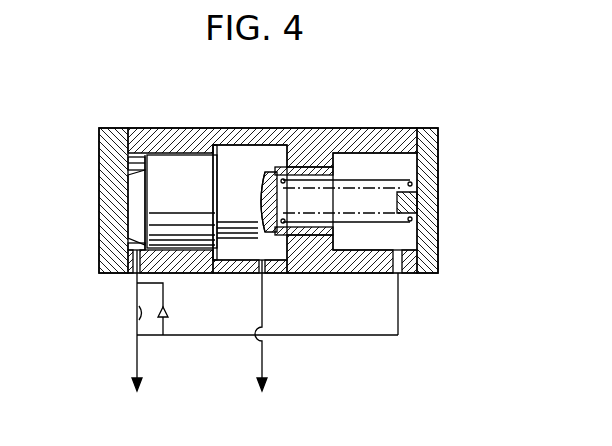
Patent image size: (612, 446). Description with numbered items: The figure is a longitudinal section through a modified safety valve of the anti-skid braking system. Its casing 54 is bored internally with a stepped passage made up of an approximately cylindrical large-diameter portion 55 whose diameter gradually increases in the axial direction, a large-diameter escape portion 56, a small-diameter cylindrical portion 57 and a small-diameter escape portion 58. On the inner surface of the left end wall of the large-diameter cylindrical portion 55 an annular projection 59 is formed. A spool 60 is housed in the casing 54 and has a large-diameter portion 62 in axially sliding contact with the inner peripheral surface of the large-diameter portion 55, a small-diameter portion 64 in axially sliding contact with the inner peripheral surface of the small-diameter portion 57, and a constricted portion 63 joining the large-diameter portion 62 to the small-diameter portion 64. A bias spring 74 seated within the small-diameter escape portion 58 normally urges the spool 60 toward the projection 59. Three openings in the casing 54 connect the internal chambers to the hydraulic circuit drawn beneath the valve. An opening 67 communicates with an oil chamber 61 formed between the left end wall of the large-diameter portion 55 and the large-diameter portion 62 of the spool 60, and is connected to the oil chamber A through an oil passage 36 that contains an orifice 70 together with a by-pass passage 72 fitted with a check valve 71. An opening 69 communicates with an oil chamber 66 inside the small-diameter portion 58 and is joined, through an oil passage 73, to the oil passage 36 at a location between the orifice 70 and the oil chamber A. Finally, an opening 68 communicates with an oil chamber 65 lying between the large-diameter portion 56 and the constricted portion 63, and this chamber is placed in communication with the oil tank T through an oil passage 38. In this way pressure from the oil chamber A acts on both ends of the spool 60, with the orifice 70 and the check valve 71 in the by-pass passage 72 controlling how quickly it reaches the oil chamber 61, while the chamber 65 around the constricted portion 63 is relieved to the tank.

The oil passage 36 is at (136, 358).
The oil passage 38 is at (264, 358).
The casing 54 is at (327, 133).
The large-diameter cylindrical portion 55 is at (185, 156).
The large-diameter escape portion 56 is at (256, 144).
The small-diameter cylindrical portion 57 is at (305, 167).
The small-diameter escape portion 58 is at (378, 152).
The annular projection 59 is at (140, 125).
The spool 60 is at (258, 212).
The oil chamber 61 is at (140, 243).
The large-diameter portion 62 is at (207, 152).
The constricted portion 63 is at (258, 173).
The small-diameter portion 64 is at (333, 172).
The oil chamber 65 is at (230, 258).
The oil chamber 66 is at (367, 255).
The opening 67 is at (120, 278).
The opening 68 is at (268, 272).
The opening 69 is at (402, 272).
The orifice 70 is at (132, 313).
The check valve 71 is at (167, 312).
The line 72 is at (163, 287).
The oil passage 73 is at (225, 336).
The bias spring 74 is at (286, 195).